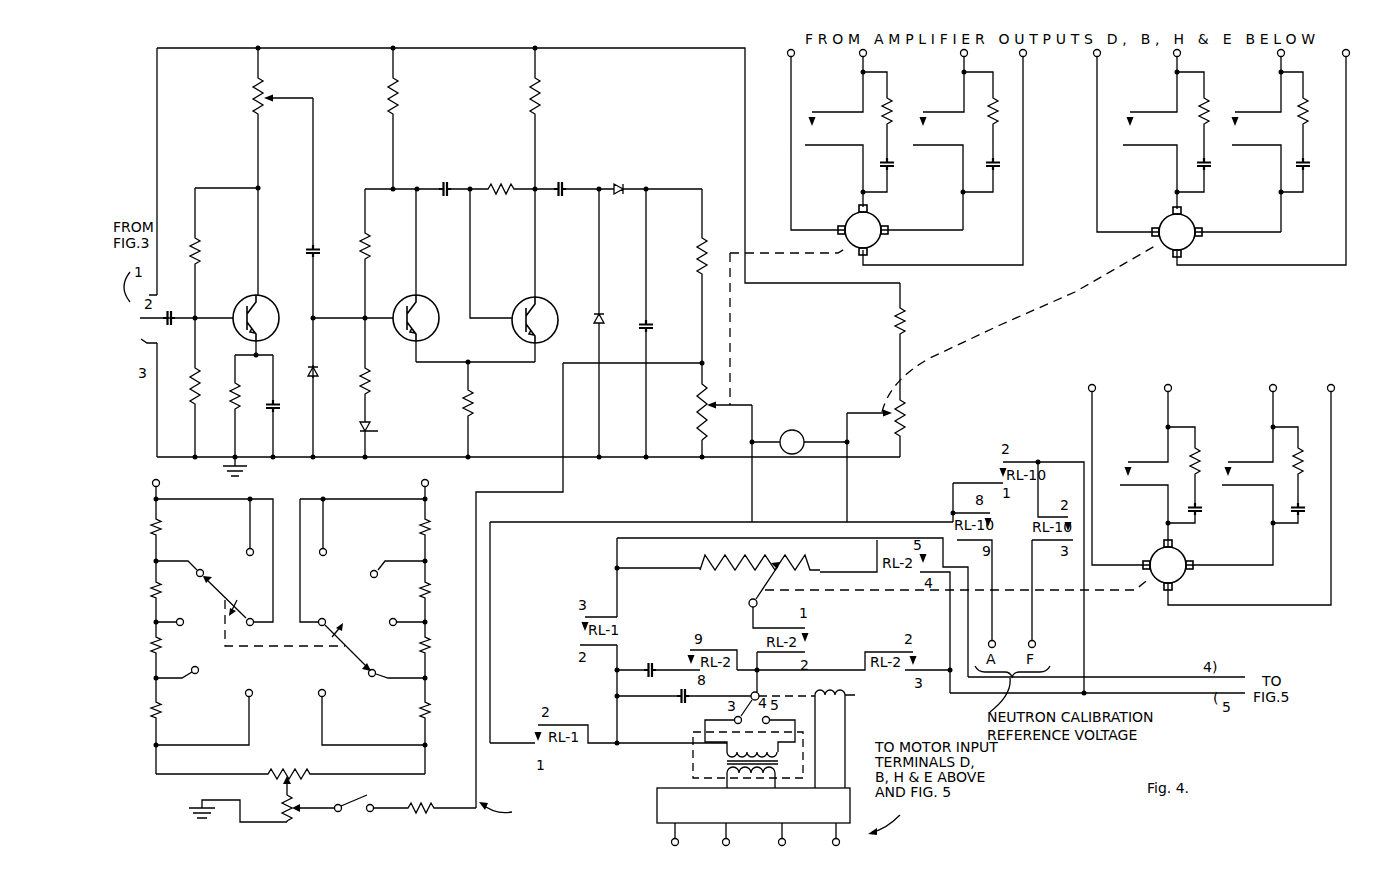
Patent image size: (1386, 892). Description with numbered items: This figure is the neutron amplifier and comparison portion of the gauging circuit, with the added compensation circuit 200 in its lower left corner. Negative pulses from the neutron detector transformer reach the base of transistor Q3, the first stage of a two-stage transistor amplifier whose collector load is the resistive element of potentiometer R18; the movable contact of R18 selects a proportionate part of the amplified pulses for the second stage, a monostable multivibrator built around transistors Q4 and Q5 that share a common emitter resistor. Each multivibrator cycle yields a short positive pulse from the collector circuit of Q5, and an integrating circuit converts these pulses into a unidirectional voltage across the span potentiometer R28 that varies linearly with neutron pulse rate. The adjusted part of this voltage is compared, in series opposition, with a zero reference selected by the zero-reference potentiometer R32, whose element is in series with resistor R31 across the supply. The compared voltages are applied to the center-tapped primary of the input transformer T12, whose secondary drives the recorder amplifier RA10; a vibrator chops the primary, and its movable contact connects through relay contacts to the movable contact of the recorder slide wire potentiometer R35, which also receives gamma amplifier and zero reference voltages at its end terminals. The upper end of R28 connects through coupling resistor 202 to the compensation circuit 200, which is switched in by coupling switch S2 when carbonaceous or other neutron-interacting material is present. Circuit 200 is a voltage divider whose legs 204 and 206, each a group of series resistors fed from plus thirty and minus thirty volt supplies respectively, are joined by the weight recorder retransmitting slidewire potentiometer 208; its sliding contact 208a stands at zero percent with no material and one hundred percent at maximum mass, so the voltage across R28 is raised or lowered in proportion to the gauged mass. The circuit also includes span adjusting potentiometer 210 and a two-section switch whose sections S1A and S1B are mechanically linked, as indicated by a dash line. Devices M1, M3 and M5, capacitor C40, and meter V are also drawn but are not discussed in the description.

The compensation circuit 200 is at (170, 786).
The leg 204 is at (140, 506).
The leg 206 is at (439, 514).
The weight recorder retransmitting slidewire potentiometer 208 is at (268, 756).
The sliding contact 208a is at (293, 789).
The span adjusting potentiometer 210 is at (240, 802).
The coupling resistor 202 is at (439, 807).
The switch section S1A is at (214, 621).
The switch section S1B is at (362, 621).
The coupling switch S2 is at (348, 812).
The transistor Q3 is at (275, 302).
The transistor Q4 is at (435, 302).
The transistor Q5 is at (554, 302).
The motor M1 is at (1210, 485).
The motor M3 is at (1228, 157).
The motor M5 is at (914, 157).
The input transformer T12 is at (721, 762).
The recorder amplifier RA10 is at (753, 818).
The recorder slide wire potentiometer R35 is at (720, 568).
The potentiometer R18 is at (283, 171).
The span potentiometer R28 is at (709, 442).
The zero-reference potentiometer R32 is at (900, 423).
The resistor R31 is at (917, 340).
The capacitor C40 is at (653, 697).
The voltmeter V is at (822, 466).